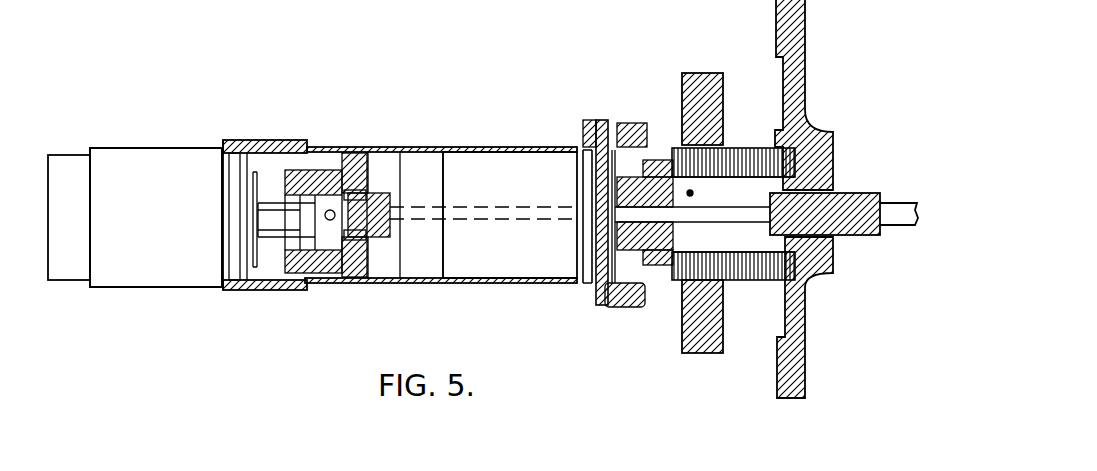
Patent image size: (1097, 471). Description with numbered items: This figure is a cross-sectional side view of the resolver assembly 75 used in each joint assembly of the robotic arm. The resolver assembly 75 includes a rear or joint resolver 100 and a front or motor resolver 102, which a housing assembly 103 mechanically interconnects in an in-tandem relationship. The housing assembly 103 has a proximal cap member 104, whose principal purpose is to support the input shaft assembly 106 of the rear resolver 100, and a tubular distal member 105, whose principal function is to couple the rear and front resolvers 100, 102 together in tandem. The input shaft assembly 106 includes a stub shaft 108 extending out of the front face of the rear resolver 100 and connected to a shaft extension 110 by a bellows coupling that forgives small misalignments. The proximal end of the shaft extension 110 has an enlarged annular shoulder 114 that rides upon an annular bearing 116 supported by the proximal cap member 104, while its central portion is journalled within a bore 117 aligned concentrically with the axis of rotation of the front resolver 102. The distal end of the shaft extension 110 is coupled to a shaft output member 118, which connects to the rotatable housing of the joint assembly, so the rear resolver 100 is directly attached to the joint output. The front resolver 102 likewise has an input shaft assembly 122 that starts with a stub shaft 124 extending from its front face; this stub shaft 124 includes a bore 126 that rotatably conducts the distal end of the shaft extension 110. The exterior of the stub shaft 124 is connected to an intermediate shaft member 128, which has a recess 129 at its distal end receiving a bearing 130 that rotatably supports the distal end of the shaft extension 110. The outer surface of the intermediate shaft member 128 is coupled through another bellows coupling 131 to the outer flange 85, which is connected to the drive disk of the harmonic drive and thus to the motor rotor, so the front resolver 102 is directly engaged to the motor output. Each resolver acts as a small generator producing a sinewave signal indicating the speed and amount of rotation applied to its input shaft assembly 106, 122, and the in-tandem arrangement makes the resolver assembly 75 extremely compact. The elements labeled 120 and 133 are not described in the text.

The resolver assembly 75 is at (125, 140).
The outer flange 85 is at (808, 362).
The rear resolver 100 is at (180, 235).
The front resolver 102 is at (530, 190).
The housing assembly 103 is at (284, 138).
The proximal cap member 104 is at (284, 292).
The tubular distal member 105 is at (455, 285).
The input shaft assembly 106 is at (396, 194).
The stub shaft 108 is at (306, 286).
The shaft extension 110 is at (588, 238).
The annular shoulder 114 is at (378, 240).
The annular bearing 116 is at (357, 187).
The bore 117 is at (517, 230).
The shaft output member 118 is at (863, 222).
The bearing sleeve 120 is at (757, 240).
The input shaft assembly 122 is at (625, 124).
The stub shaft 124 is at (604, 290).
The bore 126 is at (600, 210).
The intermediate shaft member 128 is at (645, 258).
The recess 129 is at (692, 192).
The bearing 130 is at (665, 157).
The bellows coupling 131 is at (725, 162).
The bracket 133 is at (707, 88).